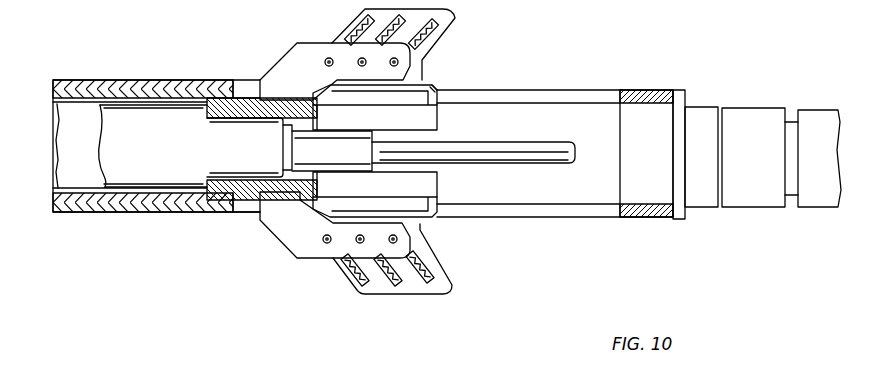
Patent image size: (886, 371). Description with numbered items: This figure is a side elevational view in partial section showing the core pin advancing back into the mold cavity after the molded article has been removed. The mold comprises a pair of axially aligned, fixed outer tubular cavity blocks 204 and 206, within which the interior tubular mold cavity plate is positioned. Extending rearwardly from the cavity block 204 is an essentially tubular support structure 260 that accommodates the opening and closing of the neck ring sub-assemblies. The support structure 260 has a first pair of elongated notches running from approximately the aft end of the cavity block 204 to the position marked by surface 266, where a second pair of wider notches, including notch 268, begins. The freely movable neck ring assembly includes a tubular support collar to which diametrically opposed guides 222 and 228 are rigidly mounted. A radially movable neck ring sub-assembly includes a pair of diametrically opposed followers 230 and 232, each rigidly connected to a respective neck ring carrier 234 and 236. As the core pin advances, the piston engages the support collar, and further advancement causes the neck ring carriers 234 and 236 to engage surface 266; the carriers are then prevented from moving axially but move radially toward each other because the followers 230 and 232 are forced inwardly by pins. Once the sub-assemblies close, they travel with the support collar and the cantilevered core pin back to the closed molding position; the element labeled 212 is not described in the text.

The outer tubular cavity block 204 is at (703, 112).
The outer tubular cavity block 206 is at (765, 117).
The rod 212 is at (541, 152).
The guide 222 is at (275, 70).
The guide 228 is at (278, 225).
The follower 230 is at (458, 24).
The follower 232 is at (453, 280).
The neck ring carrier 234 is at (432, 117).
The neck ring carrier 236 is at (432, 185).
The tubular support structure 260 is at (648, 208).
The surface 266 is at (437, 88).
The notch 268 is at (210, 97).